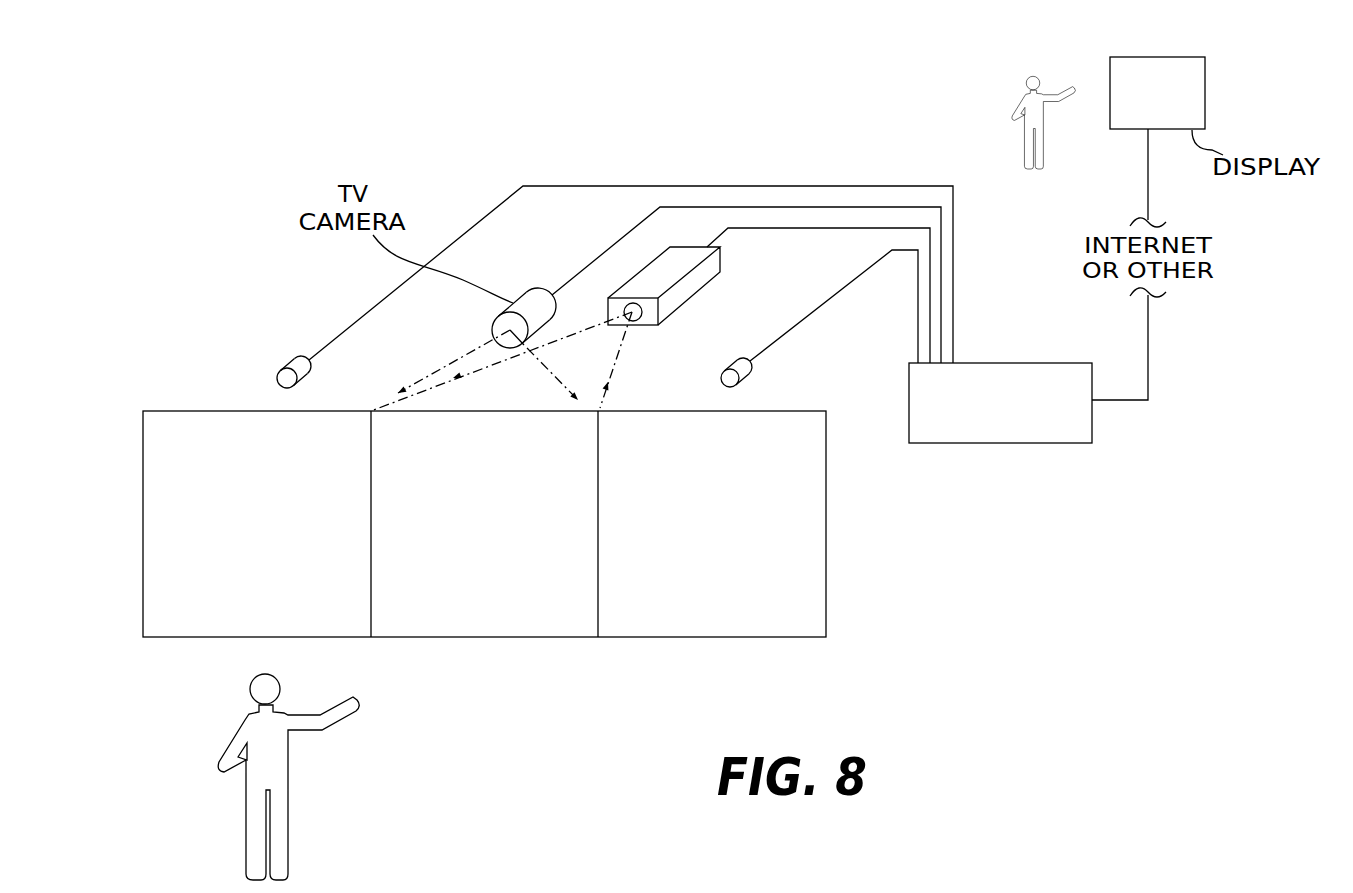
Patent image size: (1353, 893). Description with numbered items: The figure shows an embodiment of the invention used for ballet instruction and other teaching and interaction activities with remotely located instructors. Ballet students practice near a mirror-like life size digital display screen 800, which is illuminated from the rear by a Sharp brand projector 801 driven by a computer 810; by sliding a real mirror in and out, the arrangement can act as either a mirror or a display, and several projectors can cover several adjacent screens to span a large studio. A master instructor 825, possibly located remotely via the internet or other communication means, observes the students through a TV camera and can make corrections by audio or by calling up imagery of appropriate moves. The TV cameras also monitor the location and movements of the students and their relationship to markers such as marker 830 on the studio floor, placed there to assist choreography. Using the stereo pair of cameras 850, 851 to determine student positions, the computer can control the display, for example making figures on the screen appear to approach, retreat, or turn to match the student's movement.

The digital display screen 800 is at (544, 623).
The projector 801 is at (707, 286).
The computer 810 is at (978, 427).
The master instructor 825 is at (1021, 106).
The marker 830 is at (244, 856).
The camera 850 is at (287, 368).
The camera 851 is at (752, 368).